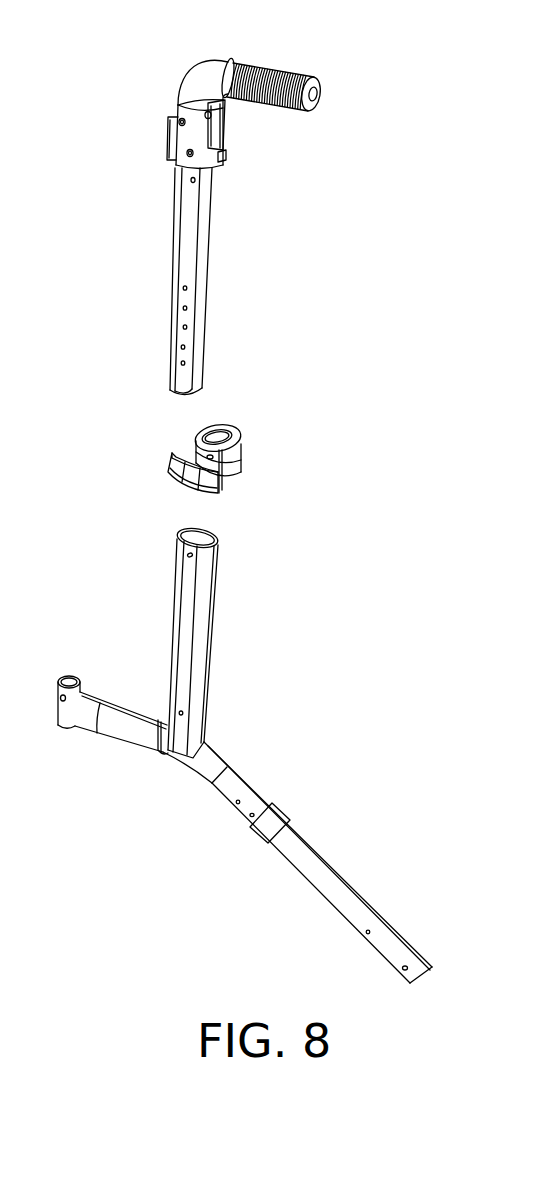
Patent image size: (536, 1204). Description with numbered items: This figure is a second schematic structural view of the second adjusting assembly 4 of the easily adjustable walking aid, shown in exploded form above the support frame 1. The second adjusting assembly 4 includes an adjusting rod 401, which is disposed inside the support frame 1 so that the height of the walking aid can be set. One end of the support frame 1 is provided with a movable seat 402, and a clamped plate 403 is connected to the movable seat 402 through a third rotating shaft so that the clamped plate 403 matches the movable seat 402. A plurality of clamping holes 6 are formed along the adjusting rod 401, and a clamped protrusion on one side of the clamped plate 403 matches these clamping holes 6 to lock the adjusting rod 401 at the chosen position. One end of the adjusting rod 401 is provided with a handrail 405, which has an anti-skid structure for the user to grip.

The support frame 1 is at (205, 658).
The second adjusting assembly 4 is at (352, 115).
The clamping hole 6 is at (187, 341).
The adjusting rod 401 is at (204, 271).
The movable seat 402 is at (230, 447).
The clamped plate 403 is at (182, 460).
The handrail 405 is at (200, 98).